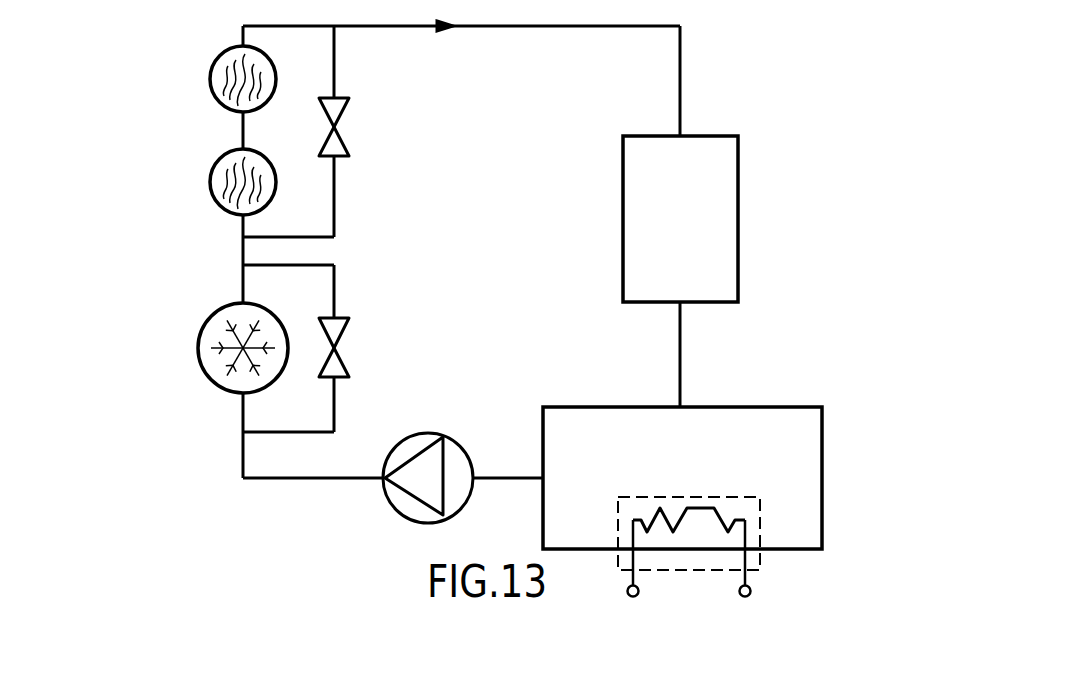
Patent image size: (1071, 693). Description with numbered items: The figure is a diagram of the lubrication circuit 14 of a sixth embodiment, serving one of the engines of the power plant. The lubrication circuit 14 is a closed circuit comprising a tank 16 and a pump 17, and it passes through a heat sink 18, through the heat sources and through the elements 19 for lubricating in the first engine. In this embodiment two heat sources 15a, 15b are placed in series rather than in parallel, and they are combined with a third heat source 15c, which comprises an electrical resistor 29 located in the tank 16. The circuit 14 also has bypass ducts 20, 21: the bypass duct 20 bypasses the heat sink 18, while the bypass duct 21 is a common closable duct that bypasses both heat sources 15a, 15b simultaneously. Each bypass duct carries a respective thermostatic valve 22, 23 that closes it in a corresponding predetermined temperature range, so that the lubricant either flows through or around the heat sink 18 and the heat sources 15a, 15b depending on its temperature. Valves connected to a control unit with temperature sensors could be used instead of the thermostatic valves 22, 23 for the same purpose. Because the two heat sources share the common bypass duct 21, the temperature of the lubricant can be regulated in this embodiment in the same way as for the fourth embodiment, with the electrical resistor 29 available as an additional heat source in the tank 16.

The lubrication circuit 14 is at (752, 54).
The heat source 15a is at (210, 182).
The heat source 15b is at (210, 78).
The third heat source 15c is at (843, 468).
The tank 16 is at (694, 458).
The pump 17 is at (426, 432).
The heat sink 18 is at (197, 350).
The elements for lubricating 19 is at (696, 230).
The bypass duct 20 is at (336, 406).
The bypass duct 21 is at (336, 183).
The thermostatic valve 22 is at (337, 347).
The thermostatic valve 23 is at (337, 126).
The electrical resistor 29 is at (715, 510).